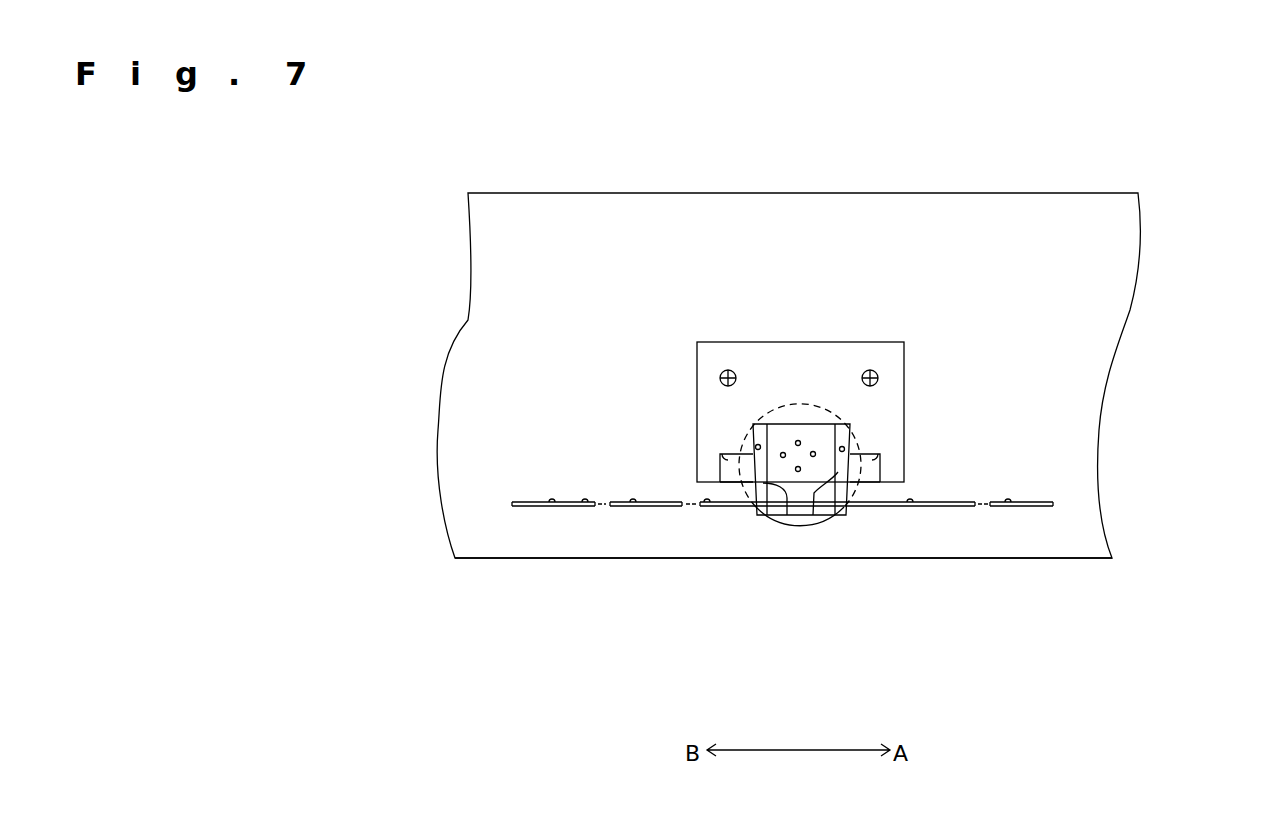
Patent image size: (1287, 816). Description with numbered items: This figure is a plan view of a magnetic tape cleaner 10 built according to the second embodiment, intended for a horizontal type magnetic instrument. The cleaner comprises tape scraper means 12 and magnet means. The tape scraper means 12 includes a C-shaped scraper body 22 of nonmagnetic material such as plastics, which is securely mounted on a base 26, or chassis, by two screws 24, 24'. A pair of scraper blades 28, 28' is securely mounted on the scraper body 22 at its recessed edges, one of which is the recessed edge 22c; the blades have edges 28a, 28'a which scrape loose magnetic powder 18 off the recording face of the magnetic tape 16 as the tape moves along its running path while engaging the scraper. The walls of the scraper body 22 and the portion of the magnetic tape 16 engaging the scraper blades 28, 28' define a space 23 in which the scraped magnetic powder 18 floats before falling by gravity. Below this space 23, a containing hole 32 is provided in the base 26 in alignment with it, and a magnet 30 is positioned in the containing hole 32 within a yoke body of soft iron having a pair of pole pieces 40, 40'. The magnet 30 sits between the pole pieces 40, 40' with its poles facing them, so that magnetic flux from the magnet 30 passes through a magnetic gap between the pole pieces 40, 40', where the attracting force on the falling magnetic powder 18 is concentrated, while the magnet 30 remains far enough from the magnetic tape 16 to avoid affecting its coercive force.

The magnetic tape cleaner 10 is at (933, 286).
The tape scraper means 12 is at (796, 327).
The magnetic tape 16 is at (1043, 502).
The magnetic powder 18 is at (550, 502).
The scraper body 22 is at (765, 363).
The recessed edge 22c is at (722, 458).
The space 23 is at (818, 405).
The screw 24 is at (691, 239).
The screw 24' is at (910, 239).
The base 26 is at (510, 215).
The scraper blade 28 is at (666, 556).
The edge 28a is at (755, 503).
The scraper blade 28' is at (933, 556).
The edge 28'a is at (898, 570).
The magnet 30 is at (820, 495).
The containing hole 32 is at (770, 518).
The pole piece 40 is at (762, 571).
The pole piece 40' is at (820, 565).